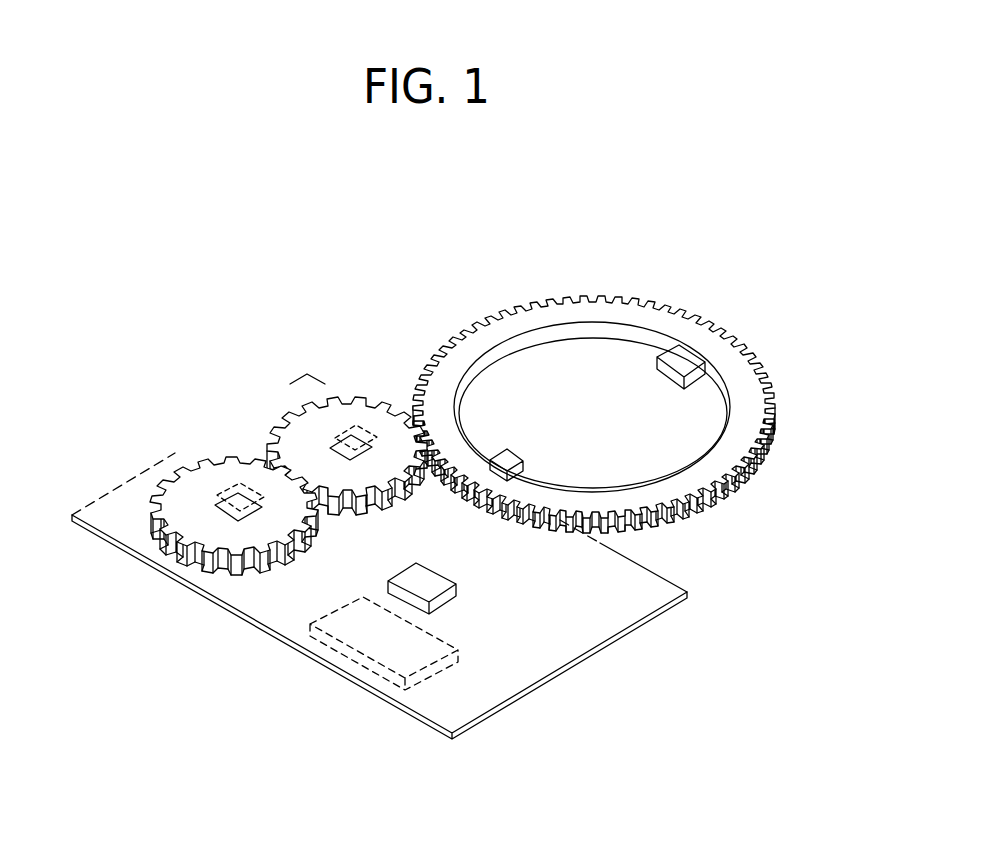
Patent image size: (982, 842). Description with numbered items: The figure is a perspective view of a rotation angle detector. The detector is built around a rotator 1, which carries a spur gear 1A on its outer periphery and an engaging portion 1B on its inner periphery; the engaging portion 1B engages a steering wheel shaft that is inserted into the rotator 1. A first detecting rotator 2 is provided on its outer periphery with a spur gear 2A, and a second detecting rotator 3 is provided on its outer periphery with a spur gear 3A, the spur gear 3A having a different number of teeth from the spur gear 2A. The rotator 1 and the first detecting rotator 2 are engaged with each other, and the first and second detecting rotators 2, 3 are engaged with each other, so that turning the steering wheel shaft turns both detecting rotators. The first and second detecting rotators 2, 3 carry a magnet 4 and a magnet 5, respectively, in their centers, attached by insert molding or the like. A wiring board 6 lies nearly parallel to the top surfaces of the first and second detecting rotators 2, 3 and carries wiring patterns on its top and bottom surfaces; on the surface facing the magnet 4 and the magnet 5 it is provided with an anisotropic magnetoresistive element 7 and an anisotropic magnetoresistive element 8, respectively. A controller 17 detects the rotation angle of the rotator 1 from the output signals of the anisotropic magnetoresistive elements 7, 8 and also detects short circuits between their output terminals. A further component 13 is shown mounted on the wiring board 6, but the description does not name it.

The rotator 1 is at (625, 382).
The spur gear 1A is at (770, 443).
The engaging portion 1B is at (680, 355).
The first detecting rotator 2 is at (281, 395).
The spur gear 2A is at (357, 398).
The second detecting rotator 3 is at (174, 516).
The spur gear 3A is at (155, 495).
The magnet 4 is at (330, 448).
The magnet 5 is at (232, 520).
The wiring board 6 is at (406, 572).
The anisotropic magnetoresistive element 7 is at (345, 432).
The anisotropic magnetoresistive element 8 is at (228, 503).
The sensor 13 is at (435, 588).
The controller 17 is at (368, 628).